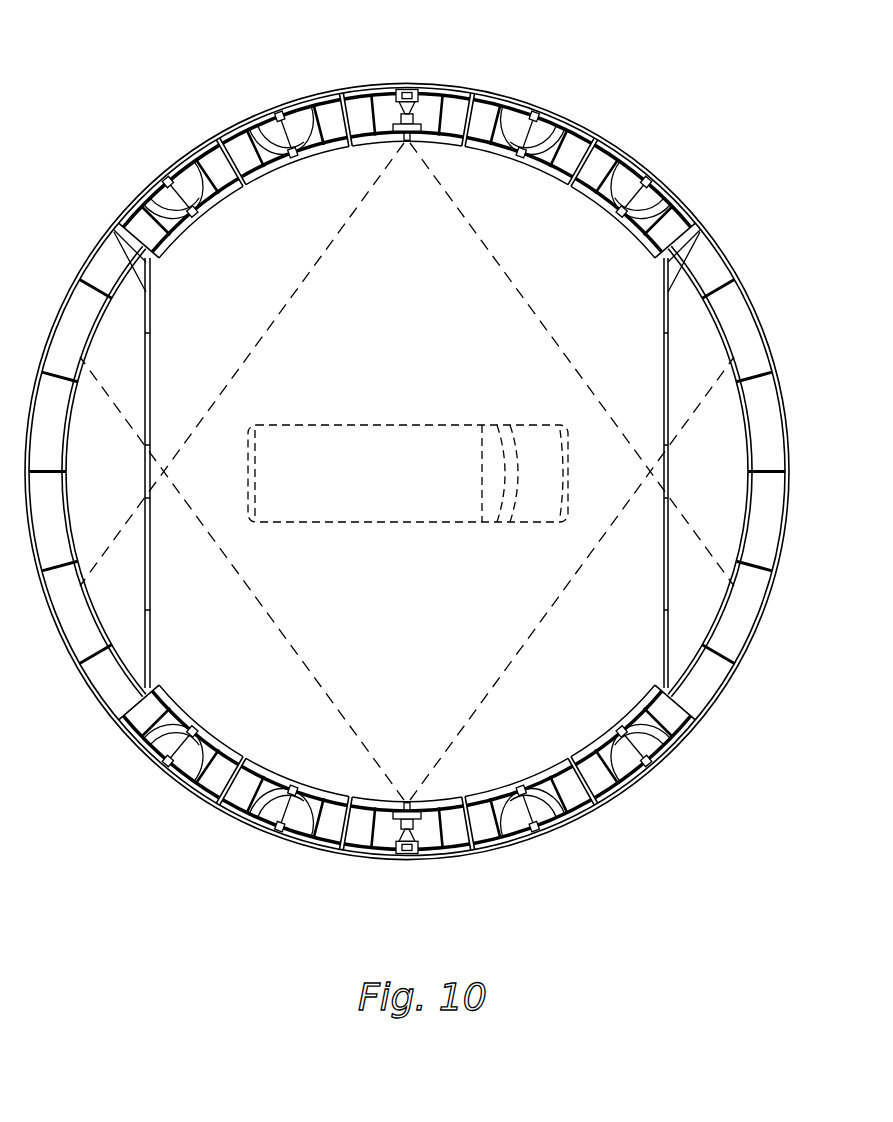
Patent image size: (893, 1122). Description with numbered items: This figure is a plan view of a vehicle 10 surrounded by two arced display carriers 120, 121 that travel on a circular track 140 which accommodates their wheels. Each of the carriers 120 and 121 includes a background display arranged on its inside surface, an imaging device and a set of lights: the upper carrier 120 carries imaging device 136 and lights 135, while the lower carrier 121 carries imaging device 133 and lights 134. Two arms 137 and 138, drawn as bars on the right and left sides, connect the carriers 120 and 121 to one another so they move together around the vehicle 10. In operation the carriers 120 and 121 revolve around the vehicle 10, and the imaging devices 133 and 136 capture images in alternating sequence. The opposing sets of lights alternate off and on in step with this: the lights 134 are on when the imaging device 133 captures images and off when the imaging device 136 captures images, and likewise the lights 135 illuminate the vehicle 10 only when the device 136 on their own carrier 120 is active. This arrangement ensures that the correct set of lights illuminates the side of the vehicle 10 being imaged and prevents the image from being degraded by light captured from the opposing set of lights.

The vehicle 10 is at (398, 425).
The carrier 120 is at (293, 97).
The carrier 121 is at (521, 852).
The imaging device 133 is at (405, 801).
The lights 134 is at (162, 724).
The lights 135 is at (266, 148).
The imaging device 136 is at (407, 146).
The arm 137 is at (670, 470).
The arm 138 is at (145, 470).
The track 140 is at (733, 262).